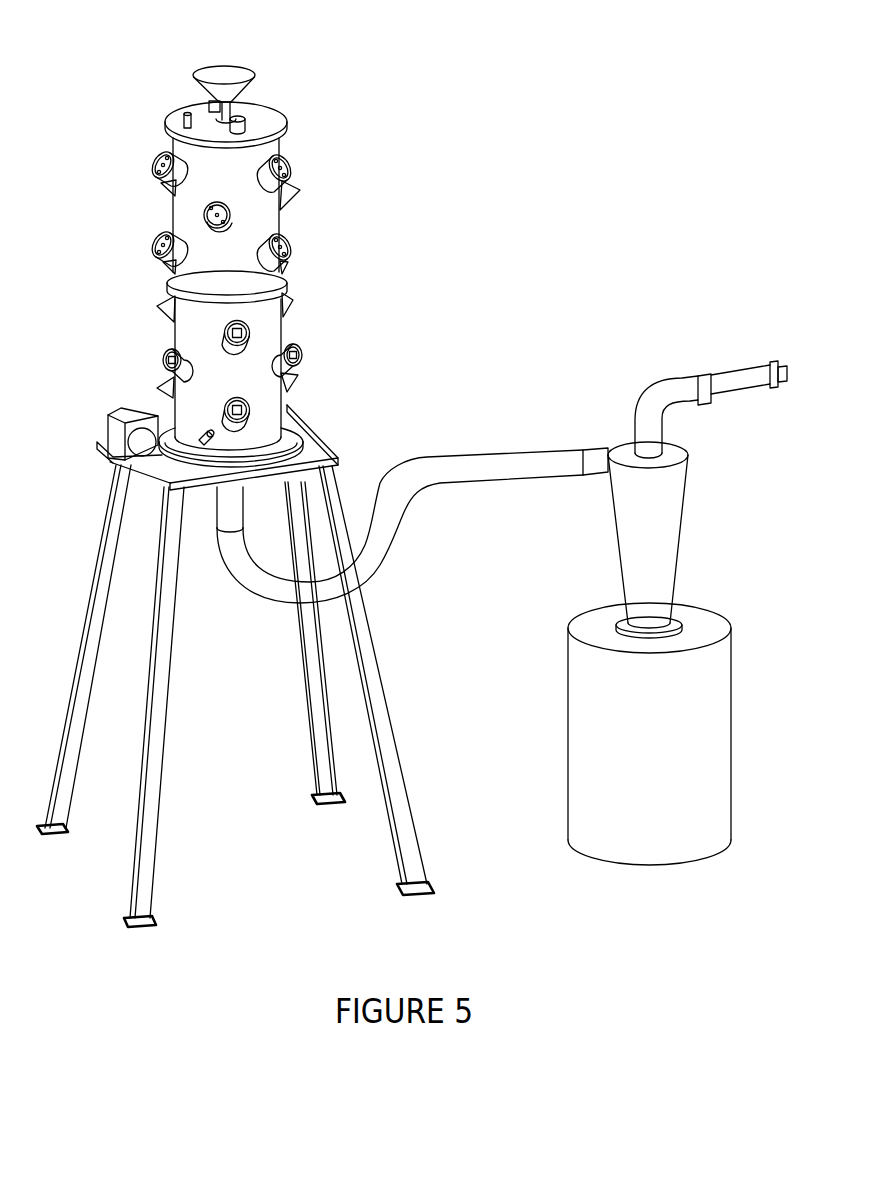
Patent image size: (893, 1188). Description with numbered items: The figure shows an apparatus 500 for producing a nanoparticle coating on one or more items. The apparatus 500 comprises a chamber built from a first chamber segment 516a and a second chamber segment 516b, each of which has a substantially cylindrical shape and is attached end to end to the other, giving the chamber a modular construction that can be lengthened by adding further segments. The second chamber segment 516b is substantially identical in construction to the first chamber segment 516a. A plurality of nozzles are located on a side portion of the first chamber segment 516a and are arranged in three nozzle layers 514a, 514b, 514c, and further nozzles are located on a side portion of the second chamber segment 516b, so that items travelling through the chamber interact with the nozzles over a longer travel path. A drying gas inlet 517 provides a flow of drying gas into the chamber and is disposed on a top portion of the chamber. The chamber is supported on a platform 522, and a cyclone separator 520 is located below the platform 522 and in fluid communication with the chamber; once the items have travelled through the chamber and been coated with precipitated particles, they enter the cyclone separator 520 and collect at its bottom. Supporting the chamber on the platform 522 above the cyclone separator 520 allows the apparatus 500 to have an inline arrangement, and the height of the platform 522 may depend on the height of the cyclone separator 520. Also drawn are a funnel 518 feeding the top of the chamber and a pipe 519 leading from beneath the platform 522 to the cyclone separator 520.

The apparatus 500 is at (500, 124).
The nozzle layer 514a is at (290, 160).
The nozzle layer 514b is at (296, 192).
The nozzle layer 514c is at (291, 250).
The first chamber segment 516a is at (160, 215).
The second chamber segment 516b is at (158, 337).
The drying gas inlet 517 is at (247, 128).
The feed funnel 518 is at (246, 75).
The discharge pipe 519 is at (500, 451).
The cyclone separator 520 is at (617, 527).
The platform 522 is at (300, 412).